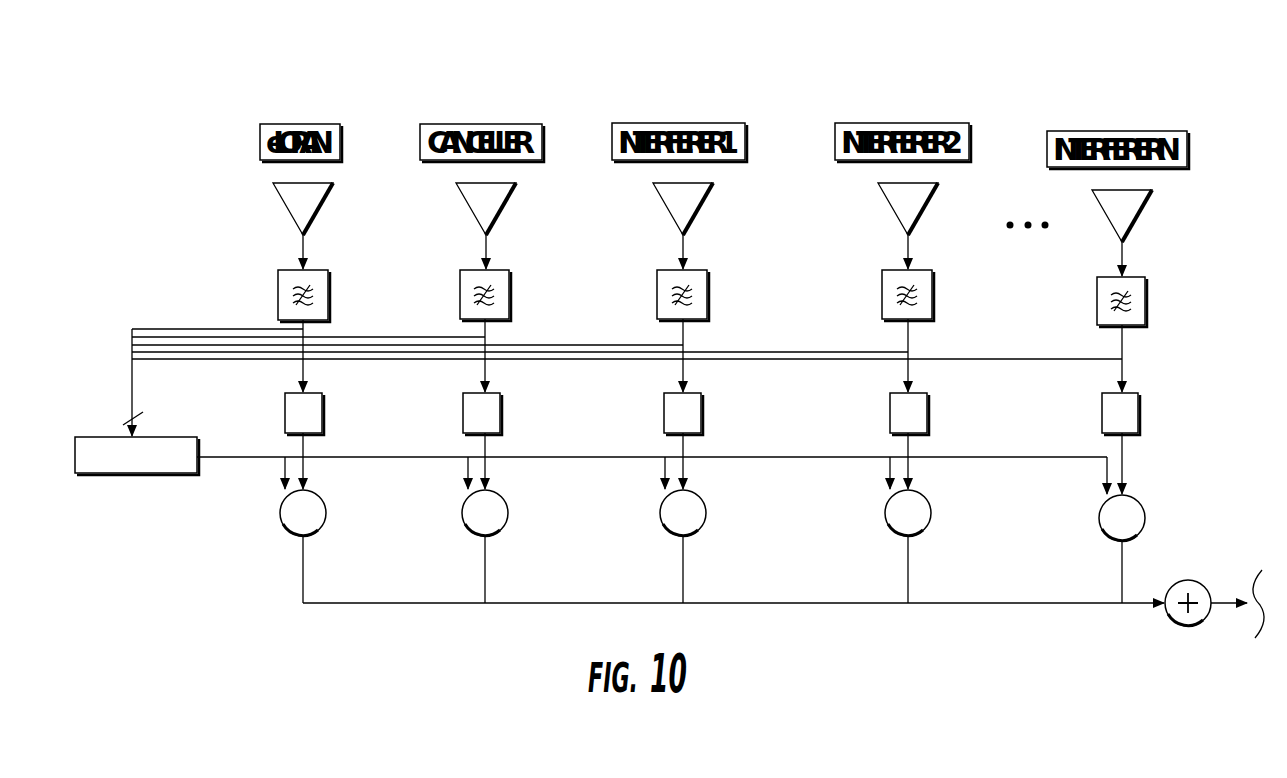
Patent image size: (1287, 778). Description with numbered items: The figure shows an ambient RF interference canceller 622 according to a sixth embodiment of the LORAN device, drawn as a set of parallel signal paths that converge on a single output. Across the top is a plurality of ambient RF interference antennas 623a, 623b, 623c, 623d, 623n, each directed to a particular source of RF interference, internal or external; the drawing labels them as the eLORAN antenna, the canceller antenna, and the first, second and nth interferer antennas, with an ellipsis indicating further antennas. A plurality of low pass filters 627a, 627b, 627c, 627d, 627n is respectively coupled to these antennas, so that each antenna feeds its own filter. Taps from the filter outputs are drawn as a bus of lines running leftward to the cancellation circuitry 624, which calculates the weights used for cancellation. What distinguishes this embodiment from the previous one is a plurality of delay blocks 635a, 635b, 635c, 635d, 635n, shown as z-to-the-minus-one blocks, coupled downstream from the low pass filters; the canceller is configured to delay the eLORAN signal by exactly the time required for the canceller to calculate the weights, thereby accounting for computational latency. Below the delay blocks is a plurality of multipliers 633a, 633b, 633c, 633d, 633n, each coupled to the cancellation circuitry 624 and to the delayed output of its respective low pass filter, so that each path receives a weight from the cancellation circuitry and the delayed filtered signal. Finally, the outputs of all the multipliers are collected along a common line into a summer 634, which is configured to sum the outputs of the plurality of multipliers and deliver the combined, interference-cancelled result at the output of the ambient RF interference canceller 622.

The ambient RF interference canceller 622 is at (960, 66).
The ambient RF interference antenna 623a is at (277, 186).
The ambient RF interference antenna 623b is at (468, 205).
The ambient RF interference antenna 623c is at (656, 193).
The ambient RF interference antenna 623d is at (880, 195).
The ambient RF interference antenna 623n is at (1144, 200).
The low pass filter 627a is at (278, 283).
The low pass filter 627b is at (460, 288).
The low pass filter 627c is at (657, 283).
The low pass filter 627d is at (882, 288).
The low pass filter 627n is at (1145, 291).
The delay block 635a is at (285, 415).
The delay block 635b is at (463, 414).
The delay block 635c is at (664, 414).
The delay block 635d is at (890, 414).
The delay block 635n is at (1102, 414).
The multiplier 633a is at (328, 515).
The multiplier 633b is at (510, 515).
The multiplier 633c is at (708, 515).
The multiplier 633d is at (933, 515).
The multiplier 633n is at (1147, 518).
The cancellation circuitry 624 is at (146, 474).
The summer 634 is at (1170, 617).